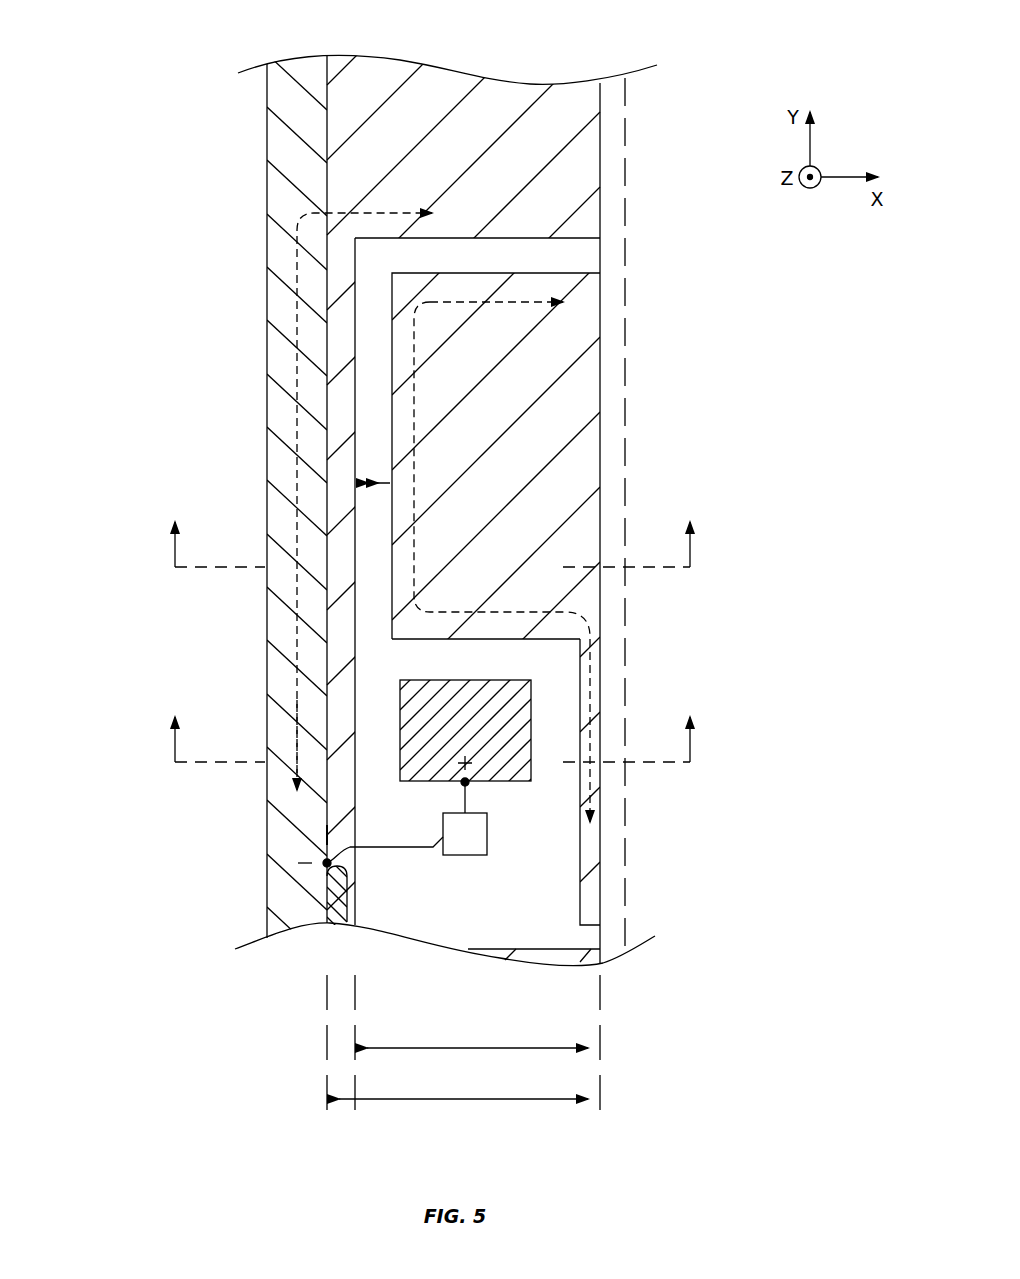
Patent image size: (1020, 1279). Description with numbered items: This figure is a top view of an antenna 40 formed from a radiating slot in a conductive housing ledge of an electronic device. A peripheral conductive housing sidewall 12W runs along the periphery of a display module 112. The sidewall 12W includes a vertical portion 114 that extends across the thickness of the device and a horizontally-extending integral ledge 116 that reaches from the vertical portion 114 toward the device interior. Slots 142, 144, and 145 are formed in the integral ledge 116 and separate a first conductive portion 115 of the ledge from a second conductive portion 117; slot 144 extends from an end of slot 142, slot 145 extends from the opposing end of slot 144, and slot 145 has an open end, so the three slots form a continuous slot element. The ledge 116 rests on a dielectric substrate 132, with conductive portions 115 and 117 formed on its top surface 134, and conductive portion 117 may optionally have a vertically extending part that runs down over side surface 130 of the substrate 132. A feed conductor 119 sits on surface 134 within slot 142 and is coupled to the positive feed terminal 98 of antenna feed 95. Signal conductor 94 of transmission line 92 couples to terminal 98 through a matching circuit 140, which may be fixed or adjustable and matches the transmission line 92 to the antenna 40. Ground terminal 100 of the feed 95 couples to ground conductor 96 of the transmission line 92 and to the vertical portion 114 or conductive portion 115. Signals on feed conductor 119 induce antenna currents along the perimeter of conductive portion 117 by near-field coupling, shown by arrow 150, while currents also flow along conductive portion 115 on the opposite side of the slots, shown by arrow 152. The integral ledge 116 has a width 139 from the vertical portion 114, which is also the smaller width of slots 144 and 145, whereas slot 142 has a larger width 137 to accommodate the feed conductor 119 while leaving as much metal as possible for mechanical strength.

The integral ledge portion 116 is at (439, 60).
The first conductive portion of integral ledge 115 is at (498, 93).
The vertical portion of peripheral conductive housing sidewall 114 is at (275, 787).
The transmission line 92 is at (308, 903).
The antenna 40 is at (654, 173).
The side surface of substrate 130 is at (606, 254).
The slot 145 is at (513, 257).
The slot 144 is at (357, 390).
The second conductive portion of integral ledge 117 is at (582, 405).
The slot 142 is at (493, 648).
The arrow representing antenna currents 150 is at (420, 418).
The arrow representing antenna currents 152 is at (297, 625).
The width 139 is at (357, 507).
The width 137 is at (463, 1047).
The feed conductor 119 is at (532, 695).
The positive feed terminal 98 is at (470, 786).
The matching circuit 140 is at (488, 832).
The signal conductor 94 is at (403, 850).
The ground terminal 100 is at (325, 864).
The antenna feed 95 is at (328, 833).
The ground conductor 96 is at (327, 913).
The top surface of substrate 134 is at (467, 894).
The dielectric substrate 132 is at (547, 937).
The peripheral conductive housing sidewall 12W is at (152, 554).
The display module 112 is at (658, 628).